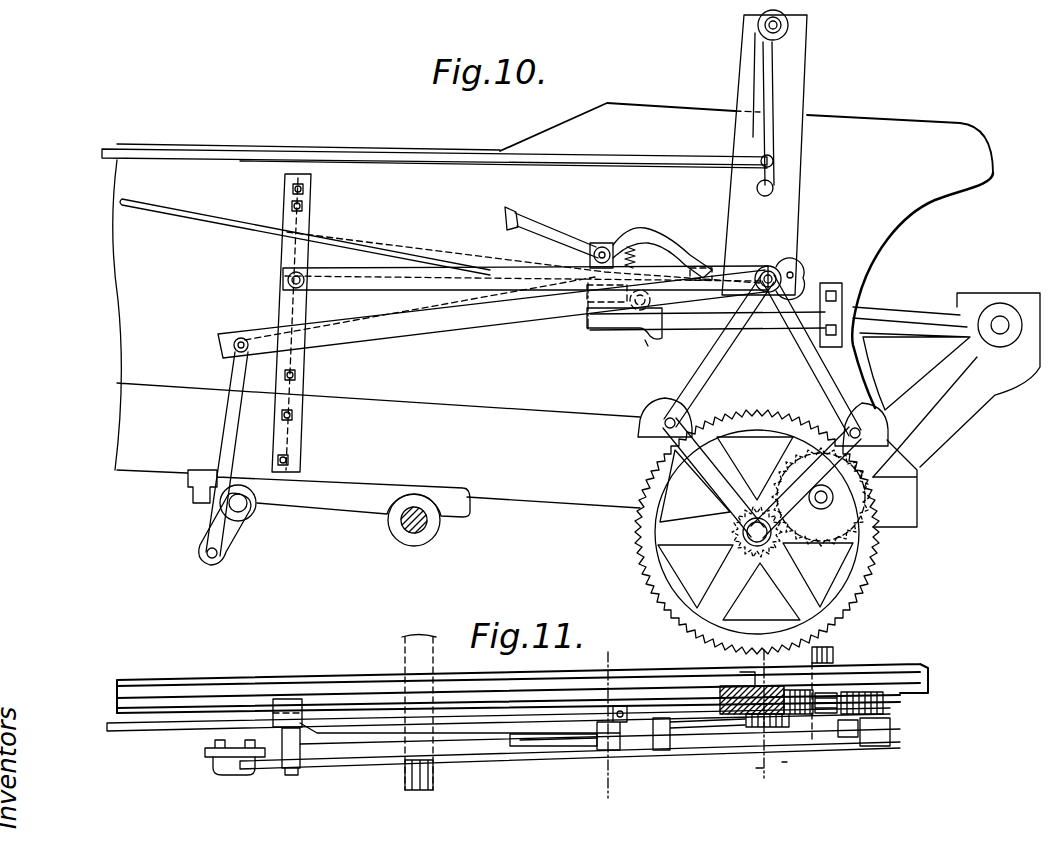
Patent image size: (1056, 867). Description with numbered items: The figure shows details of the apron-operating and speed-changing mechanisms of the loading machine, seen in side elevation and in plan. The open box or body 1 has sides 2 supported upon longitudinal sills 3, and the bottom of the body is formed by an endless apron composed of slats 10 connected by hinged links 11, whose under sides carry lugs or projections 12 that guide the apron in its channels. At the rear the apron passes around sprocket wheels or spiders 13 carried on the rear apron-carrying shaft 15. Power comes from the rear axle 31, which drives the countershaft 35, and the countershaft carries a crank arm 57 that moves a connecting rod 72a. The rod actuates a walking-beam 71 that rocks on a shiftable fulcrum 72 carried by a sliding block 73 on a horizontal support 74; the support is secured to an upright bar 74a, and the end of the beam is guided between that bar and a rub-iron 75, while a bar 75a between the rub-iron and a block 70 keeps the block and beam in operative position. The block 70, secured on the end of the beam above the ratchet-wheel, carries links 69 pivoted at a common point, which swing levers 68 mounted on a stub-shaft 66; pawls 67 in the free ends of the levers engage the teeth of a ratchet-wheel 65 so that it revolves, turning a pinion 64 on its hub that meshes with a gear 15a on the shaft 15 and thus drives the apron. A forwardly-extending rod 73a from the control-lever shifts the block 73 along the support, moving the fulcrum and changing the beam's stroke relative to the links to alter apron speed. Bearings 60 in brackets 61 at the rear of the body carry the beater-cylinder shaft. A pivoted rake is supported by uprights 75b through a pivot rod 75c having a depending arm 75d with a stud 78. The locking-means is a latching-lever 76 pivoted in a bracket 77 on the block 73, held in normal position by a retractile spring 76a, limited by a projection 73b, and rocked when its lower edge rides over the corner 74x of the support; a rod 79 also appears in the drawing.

In FIG. 10, the open box or body 1 is at (385, 172).
In FIG. 10, the sides of the body 2 is at (553, 315).
In FIG. 11, the sides of the body 2 is at (212, 692).
In FIG. 10, the longitudinal sills 3 is at (147, 462).
In FIG. 11, the longitudinal sills 3 is at (280, 680).
In FIG. 11, the slats 10 is at (784, 763).
In FIG. 11, the hinged links 11 is at (760, 770).
In FIG. 11, the lugs or projections 12 is at (766, 750).
In FIG. 11, the sprocket wheels or spiders 13 is at (614, 725).
In FIG. 10, the rear apron-carrying shaft 15 is at (826, 502).
In FIG. 11, the rear apron-carrying shaft 15 is at (834, 652).
In FIG. 10, the gear 15a is at (836, 546).
In FIG. 11, the gear 15a is at (886, 703).
In FIG. 10, the rear axle 31 is at (411, 535).
In FIG. 11, the rear axle 31 is at (410, 778).
In FIG. 10, the countershaft 35 is at (246, 506).
In FIG. 10, the crank arm 57 is at (232, 541).
In FIG. 11, the crank arm 57 is at (205, 757).
In FIG. 10, the bearings 60 is at (996, 303).
In FIG. 10, the brackets 61 is at (934, 337).
In FIG. 10, the pinion 64 is at (738, 581).
In FIG. 11, the pinion 64 is at (757, 727).
In FIG. 10, the ratchet-wheel 65 is at (664, 591).
In FIG. 11, the ratchet-wheel 65 is at (860, 746).
In FIG. 10, the stub-shaft 66 is at (730, 553).
In FIG. 11, the stub-shaft 66 is at (747, 674).
In FIG. 10, the pawls 67 is at (654, 435).
In FIG. 11, the pawls 67 is at (858, 734).
In FIG. 10, the levers 68 is at (800, 478).
In FIG. 10, the links 69 is at (722, 351).
In FIG. 11, the links 69 is at (700, 750).
In FIG. 10, the block 70 is at (770, 265).
In FIG. 10, the walking-beam 71 is at (500, 326).
In FIG. 11, the walking-beam 71 is at (345, 764).
In FIG. 10, the shiftable fulcrum 72 is at (612, 312).
In FIG. 10, the connecting rod 72a is at (222, 433).
In FIG. 11, the connecting rod 72a is at (233, 776).
In FIG. 10, the sliding block 73 is at (645, 331).
In FIG. 11, the sliding block 73 is at (655, 752).
In FIG. 10, the forwardly-extending rod 73a is at (388, 251).
In FIG. 11, the forwardly-extending rod 73a is at (545, 714).
In FIG. 10, the projection 73b is at (663, 273).
In FIG. 10, the support 74 is at (681, 327).
In FIG. 11, the support 74 is at (483, 736).
In FIG. 10, the upright bar 74a is at (306, 246).
In FIG. 11, the upright bar 74a is at (300, 712).
In FIG. 10, the corner of the support 74x is at (838, 283).
In FIG. 10, the rub-iron 75 is at (288, 247).
In FIG. 11, the rub-iron 75 is at (290, 762).
In FIG. 10, the bar 75a is at (478, 273).
In FIG. 11, the bar 75a is at (540, 748).
In FIG. 10, the uprights 75b is at (795, 194).
In FIG. 11, the uprights 75b is at (720, 702).
In FIG. 10, the rod 75c is at (788, 31).
In FIG. 10, the depending arm 75d is at (757, 143).
In FIG. 10, the latching-lever 76 is at (563, 233).
In FIG. 11, the latching-lever 76 is at (553, 747).
In FIG. 10, the retractile spring 76a is at (652, 247).
In FIG. 10, the bracket 77 is at (606, 249).
In FIG. 11, the bracket 77 is at (611, 752).
In FIG. 10, the stud 78 is at (762, 192).
In FIG. 10, the rod 79 is at (535, 163).